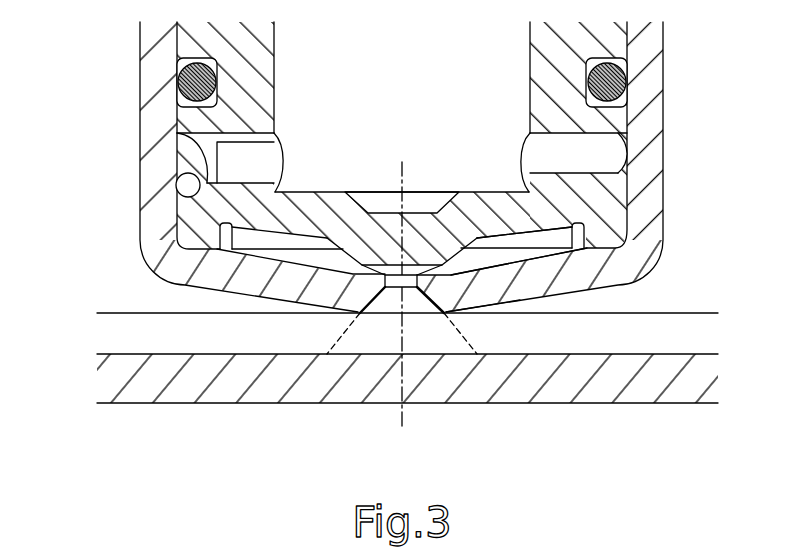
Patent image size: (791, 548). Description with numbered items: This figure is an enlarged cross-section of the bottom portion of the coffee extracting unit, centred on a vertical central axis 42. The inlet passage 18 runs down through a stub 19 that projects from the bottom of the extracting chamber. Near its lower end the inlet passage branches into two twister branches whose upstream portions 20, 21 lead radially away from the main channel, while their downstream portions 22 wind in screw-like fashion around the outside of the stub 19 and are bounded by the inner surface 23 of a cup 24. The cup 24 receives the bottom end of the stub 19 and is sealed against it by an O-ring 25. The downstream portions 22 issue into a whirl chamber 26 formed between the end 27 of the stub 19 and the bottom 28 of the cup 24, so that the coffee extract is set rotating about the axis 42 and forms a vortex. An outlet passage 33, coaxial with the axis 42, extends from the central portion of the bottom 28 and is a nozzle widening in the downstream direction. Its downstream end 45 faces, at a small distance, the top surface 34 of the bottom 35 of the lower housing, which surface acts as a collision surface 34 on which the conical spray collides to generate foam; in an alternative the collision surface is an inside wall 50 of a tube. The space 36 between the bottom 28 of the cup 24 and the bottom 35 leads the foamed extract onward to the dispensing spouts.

The inlet passage 18 is at (390, 58).
The stub 19 is at (607, 43).
The upstream portion of twister branch 20 is at (267, 160).
The upstream portion of twister branch 21 is at (537, 150).
The downstream portions of twister branches 22 is at (200, 150).
The inner surface of cup 23 is at (182, 198).
The cup 24 is at (133, 252).
The O-ring 25 is at (187, 78).
The whirl chamber 26 is at (530, 262).
The end of stub 27 is at (540, 238).
The bottom of cup 28 is at (487, 255).
The outlet passage 33 is at (408, 290).
The top surface / collision surface 34 is at (223, 356).
The bottom of lower housing 35 is at (278, 380).
The space 36 is at (232, 348).
The central axis 42 is at (403, 173).
The downstream end of outlet passage 45 is at (471, 302).
The inside wall of tube 50 is at (358, 314).